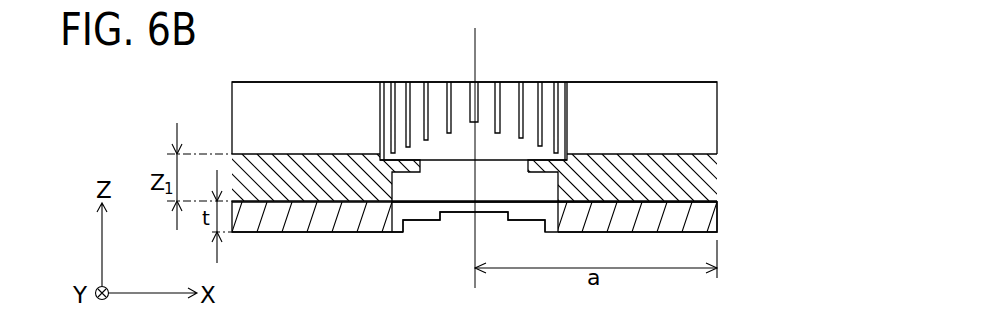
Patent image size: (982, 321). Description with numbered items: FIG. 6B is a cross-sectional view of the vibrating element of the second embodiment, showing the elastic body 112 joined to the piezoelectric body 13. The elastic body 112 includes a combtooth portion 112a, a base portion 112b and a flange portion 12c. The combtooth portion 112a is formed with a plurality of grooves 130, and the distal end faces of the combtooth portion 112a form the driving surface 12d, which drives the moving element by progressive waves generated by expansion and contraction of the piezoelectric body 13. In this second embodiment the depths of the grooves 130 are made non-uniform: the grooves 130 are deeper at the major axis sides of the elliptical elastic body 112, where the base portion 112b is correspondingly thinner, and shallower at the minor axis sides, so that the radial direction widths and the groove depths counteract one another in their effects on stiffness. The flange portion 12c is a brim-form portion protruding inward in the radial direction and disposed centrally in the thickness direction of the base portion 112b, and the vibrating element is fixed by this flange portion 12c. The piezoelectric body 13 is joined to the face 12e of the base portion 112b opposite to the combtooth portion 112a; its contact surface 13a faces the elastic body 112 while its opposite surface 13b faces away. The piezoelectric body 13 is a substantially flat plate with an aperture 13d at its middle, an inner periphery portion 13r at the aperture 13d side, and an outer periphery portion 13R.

The elastic body 112 is at (528, 118).
The combtooth portion 112a is at (524, 82).
The base portion 112b is at (712, 168).
The driving surface 12d is at (342, 82).
The flange portion 12c is at (585, 157).
The face 12e is at (280, 232).
The grooves 130 is at (543, 110).
The piezoelectric body 13 is at (517, 246).
The outer periphery portion 13R is at (718, 210).
The contact surface 13a is at (345, 195).
The surface 13b is at (315, 232).
The aperture 13d is at (428, 212).
The inner periphery portion 13r is at (547, 210).